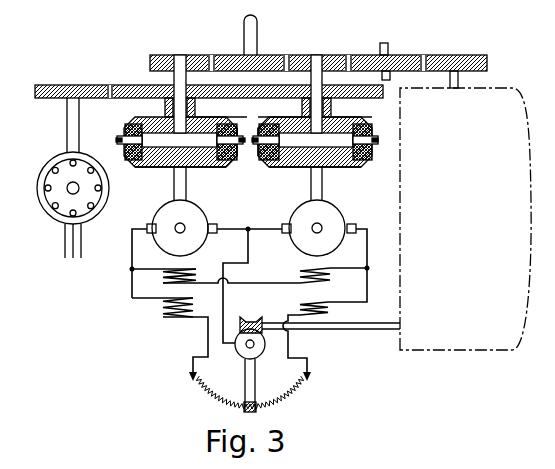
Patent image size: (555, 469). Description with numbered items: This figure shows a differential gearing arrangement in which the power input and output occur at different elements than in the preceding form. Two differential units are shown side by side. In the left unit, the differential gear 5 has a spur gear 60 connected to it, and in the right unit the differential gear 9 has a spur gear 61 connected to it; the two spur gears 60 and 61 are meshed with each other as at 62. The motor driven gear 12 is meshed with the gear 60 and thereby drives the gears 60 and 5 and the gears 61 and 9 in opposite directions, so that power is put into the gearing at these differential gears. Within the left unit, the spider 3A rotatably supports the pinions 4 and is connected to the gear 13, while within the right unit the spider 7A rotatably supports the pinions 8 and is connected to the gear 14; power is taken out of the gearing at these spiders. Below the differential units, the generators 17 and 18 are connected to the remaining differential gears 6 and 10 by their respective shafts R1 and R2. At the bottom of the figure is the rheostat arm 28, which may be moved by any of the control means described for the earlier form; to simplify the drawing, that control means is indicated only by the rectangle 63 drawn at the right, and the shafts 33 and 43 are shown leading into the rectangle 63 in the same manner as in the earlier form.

The motor driven gear 12 is at (70, 86).
The spur gear 60 is at (152, 89).
The gear 13 is at (165, 56).
The gear 14 is at (313, 56).
The shaft 43 is at (461, 77).
The differential gear 5 is at (206, 118).
The mesh point 62 is at (250, 98).
The differential gear 9 is at (283, 118).
The spur gear 61 is at (359, 99).
The pinions 4 is at (128, 149).
The spider 3A is at (162, 167).
The differential gear 6 is at (214, 162).
The pinions 8 is at (264, 152).
The differential gear 10 is at (300, 163).
The spider 7A is at (340, 163).
The shaft R1 is at (186, 188).
The shaft R2 is at (311, 190).
The generator 17 is at (200, 220).
The generator 18 is at (298, 215).
The rheostat arm 28 is at (255, 373).
The shaft 33 is at (339, 329).
The rectangle 63 is at (470, 350).